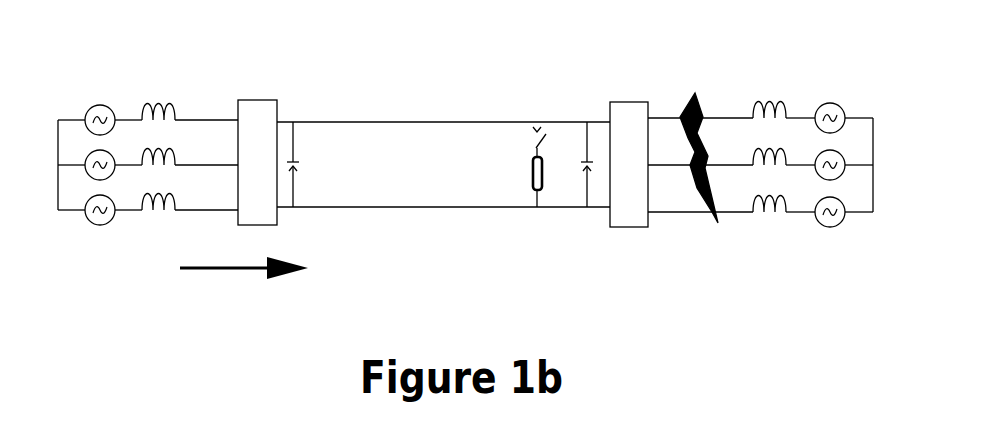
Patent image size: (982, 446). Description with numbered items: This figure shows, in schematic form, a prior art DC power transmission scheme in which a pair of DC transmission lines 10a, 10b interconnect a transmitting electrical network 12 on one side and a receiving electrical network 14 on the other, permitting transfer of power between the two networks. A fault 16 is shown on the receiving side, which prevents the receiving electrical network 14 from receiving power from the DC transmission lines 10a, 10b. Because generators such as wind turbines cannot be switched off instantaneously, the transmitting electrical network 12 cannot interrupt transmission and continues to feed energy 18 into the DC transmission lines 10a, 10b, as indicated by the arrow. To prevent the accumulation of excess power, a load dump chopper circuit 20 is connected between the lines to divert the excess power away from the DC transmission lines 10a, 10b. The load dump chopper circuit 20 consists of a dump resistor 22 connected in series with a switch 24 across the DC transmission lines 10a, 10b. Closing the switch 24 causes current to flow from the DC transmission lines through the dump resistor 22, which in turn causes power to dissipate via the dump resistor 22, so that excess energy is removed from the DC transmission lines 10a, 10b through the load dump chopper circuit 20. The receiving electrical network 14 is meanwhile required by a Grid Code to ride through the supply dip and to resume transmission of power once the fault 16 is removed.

The DC transmission line 10a is at (460, 117).
The DC transmission line 10b is at (394, 200).
The transmitting electrical network 12 is at (131, 103).
The receiving electrical network 14 is at (801, 105).
The fault 16 is at (700, 192).
The energy 18 is at (244, 261).
The load dump chopper circuit 20 is at (537, 114).
The dump resistor 22 is at (530, 173).
The switch 24 is at (530, 140).